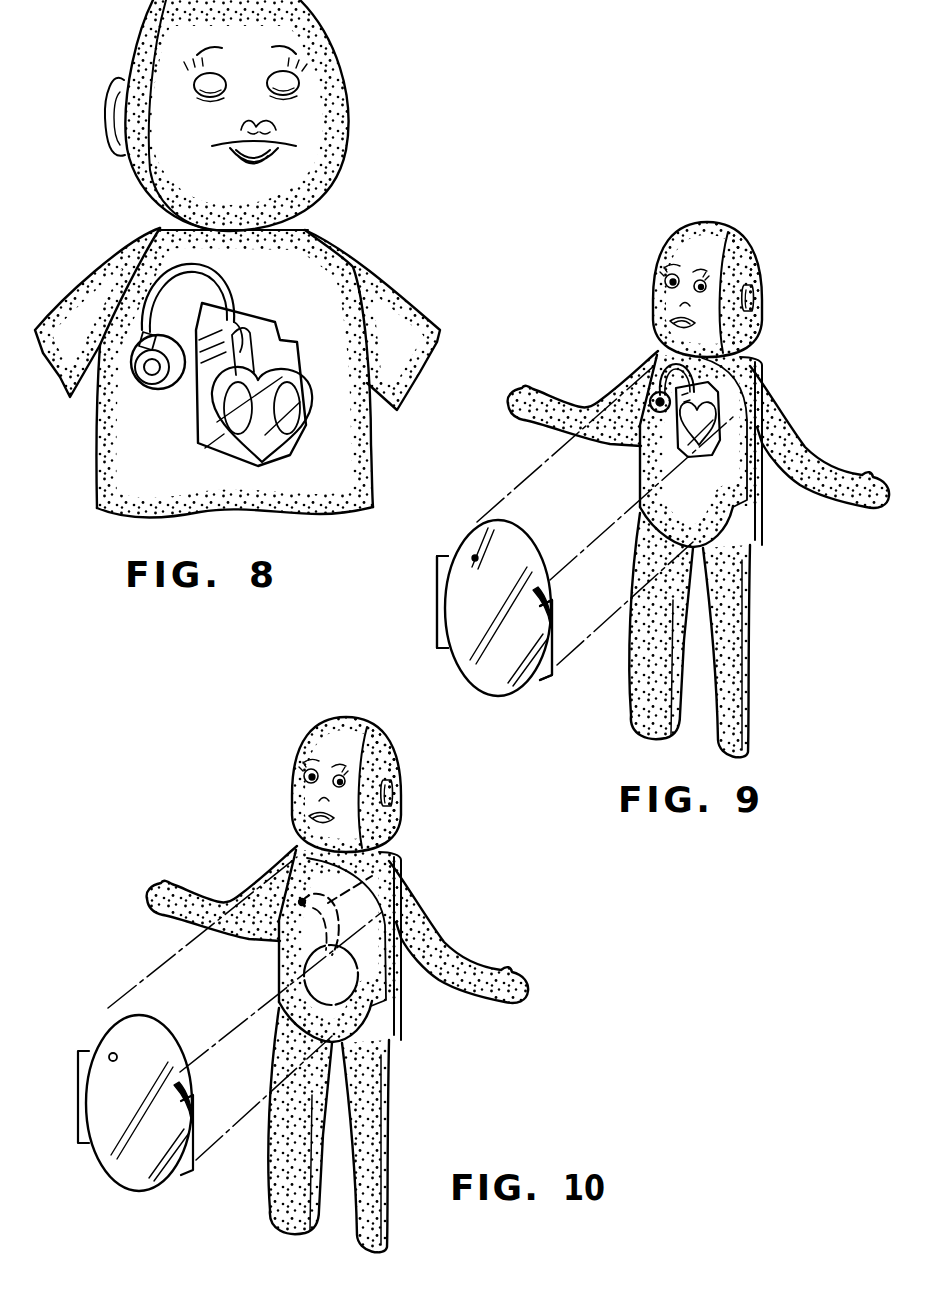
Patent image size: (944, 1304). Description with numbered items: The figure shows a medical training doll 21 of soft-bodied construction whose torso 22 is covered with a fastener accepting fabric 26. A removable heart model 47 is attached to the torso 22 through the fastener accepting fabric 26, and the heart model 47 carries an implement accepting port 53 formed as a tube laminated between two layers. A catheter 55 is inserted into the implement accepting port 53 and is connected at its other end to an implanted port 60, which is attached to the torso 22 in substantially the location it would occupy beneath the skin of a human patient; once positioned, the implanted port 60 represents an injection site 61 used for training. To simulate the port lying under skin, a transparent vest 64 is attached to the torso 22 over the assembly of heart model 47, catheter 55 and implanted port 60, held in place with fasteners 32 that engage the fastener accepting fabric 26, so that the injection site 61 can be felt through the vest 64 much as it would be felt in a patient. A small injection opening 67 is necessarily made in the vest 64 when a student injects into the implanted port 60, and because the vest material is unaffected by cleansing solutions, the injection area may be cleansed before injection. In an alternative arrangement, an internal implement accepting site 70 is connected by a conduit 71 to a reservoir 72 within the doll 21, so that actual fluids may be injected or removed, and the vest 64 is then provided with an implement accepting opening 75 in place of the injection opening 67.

In FIG. 8, the medical training doll 21 is at (308, 246).
In FIG. 9, the medical training doll 21 is at (766, 526).
In FIG. 10, the medical training doll 21 is at (416, 891).
In FIG. 8, the torso 22 is at (365, 480).
In FIG. 8, the fastener accepting fabric 26 is at (335, 338).
In FIG. 9, the fasteners 32 is at (437, 610).
In FIG. 8, the heart model 47 is at (273, 320).
In FIG. 9, the heart model 47 is at (706, 412).
In FIG. 8, the implement accepting port 53 is at (237, 330).
In FIG. 8, the catheter 55 is at (202, 268).
In FIG. 9, the catheter 55 is at (668, 356).
In FIG. 8, the implanted port 60 is at (155, 390).
In FIG. 9, the implanted port 60 is at (656, 412).
In FIG. 8, the injection site 61 is at (133, 381).
In FIG. 9, the injection site 61 is at (654, 394).
In FIG. 9, the transparent vest 64 is at (497, 683).
In FIG. 10, the transparent vest 64 is at (124, 1160).
In FIG. 9, the injection opening 67 is at (475, 558).
In FIG. 10, the internal implement accepting site 70 is at (277, 940).
In FIG. 10, the conduit 71 is at (389, 855).
In FIG. 10, the reservoir 72 is at (395, 1040).
In FIG. 10, the implement accepting opening 75 is at (111, 1054).